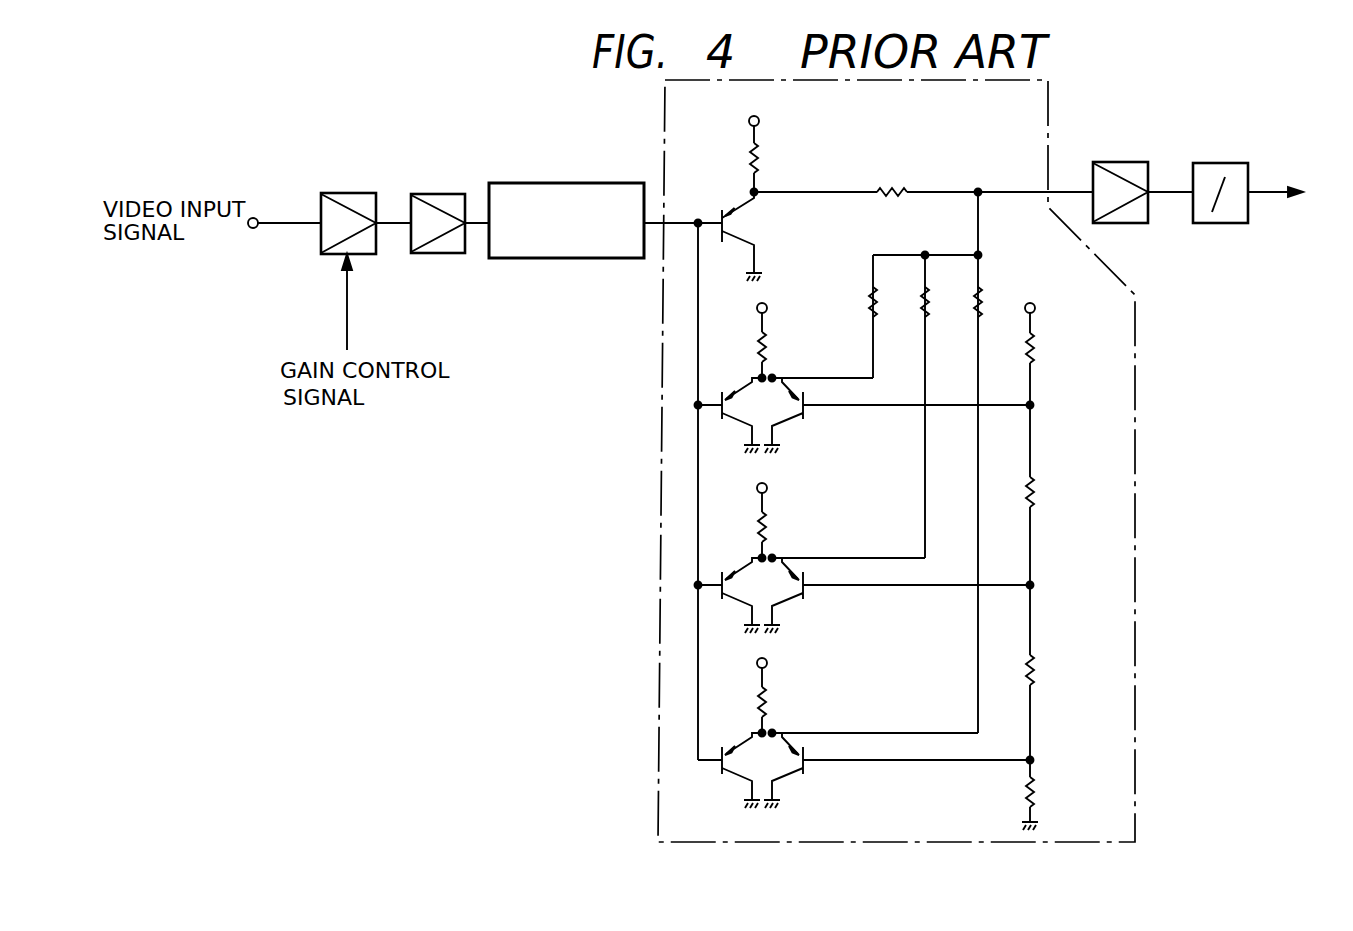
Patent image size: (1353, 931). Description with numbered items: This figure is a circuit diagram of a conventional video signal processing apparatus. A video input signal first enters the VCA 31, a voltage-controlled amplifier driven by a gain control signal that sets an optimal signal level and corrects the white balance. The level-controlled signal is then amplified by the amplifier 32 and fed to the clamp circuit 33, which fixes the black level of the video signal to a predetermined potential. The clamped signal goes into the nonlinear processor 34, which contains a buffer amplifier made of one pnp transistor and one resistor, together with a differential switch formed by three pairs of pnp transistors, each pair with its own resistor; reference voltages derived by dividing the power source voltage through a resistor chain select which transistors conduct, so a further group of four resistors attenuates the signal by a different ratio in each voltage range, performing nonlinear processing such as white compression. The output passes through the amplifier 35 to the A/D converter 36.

The VCA 31 is at (351, 193).
The amplifier 32 is at (437, 194).
The clamp circuit 33 is at (580, 183).
The nonlinear processor 34 is at (1135, 560).
The amplifier 35 is at (1116, 162).
The A/D converter 36 is at (1222, 163).